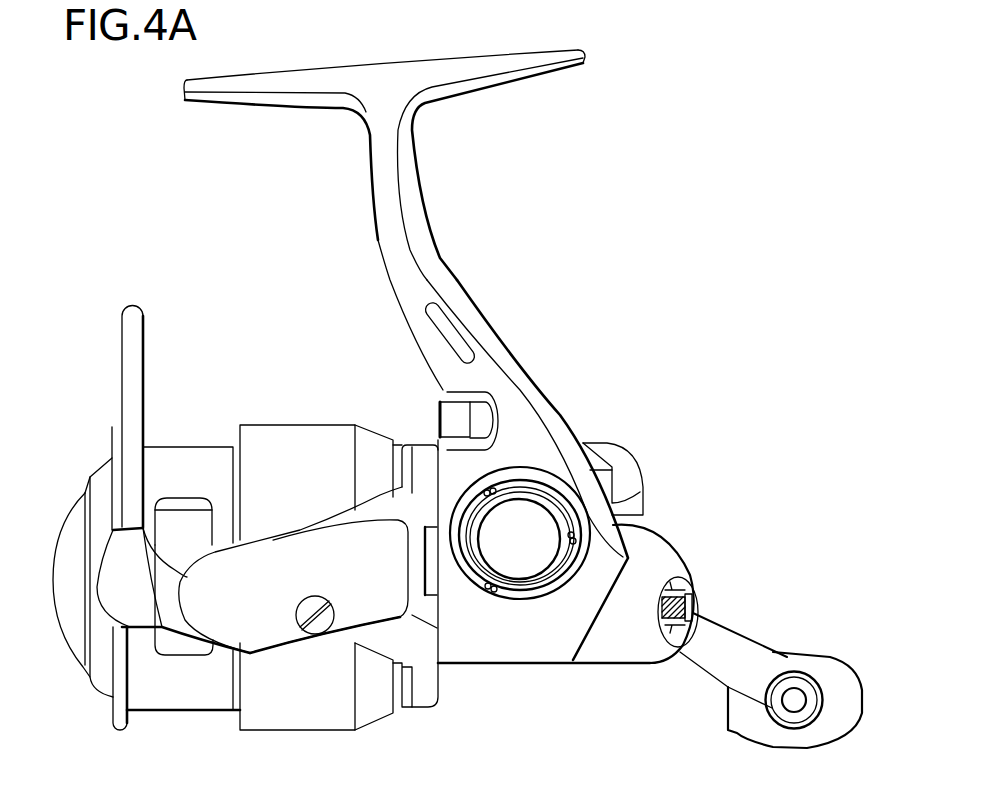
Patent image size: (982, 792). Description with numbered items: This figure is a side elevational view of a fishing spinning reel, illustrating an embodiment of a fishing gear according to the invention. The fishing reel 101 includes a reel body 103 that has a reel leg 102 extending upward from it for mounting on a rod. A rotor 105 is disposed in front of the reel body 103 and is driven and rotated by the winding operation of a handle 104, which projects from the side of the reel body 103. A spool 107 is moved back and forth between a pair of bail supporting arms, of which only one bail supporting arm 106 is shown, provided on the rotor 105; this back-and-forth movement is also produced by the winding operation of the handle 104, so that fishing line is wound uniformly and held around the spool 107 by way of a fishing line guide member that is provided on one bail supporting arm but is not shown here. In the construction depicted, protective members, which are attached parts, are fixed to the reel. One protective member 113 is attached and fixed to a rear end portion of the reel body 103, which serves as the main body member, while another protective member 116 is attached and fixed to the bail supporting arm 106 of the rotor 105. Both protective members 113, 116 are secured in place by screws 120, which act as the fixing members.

The fishing reel 101 is at (547, 272).
The reel leg 102 is at (525, 73).
The reel body 103 is at (553, 413).
The handle 104 is at (800, 650).
The rotor 105 is at (420, 450).
The bail supporting arm 106 is at (380, 633).
The spool 107 is at (313, 432).
The protective member 113 is at (688, 525).
The protective member 116 is at (222, 643).
The screw 120 is at (318, 633).